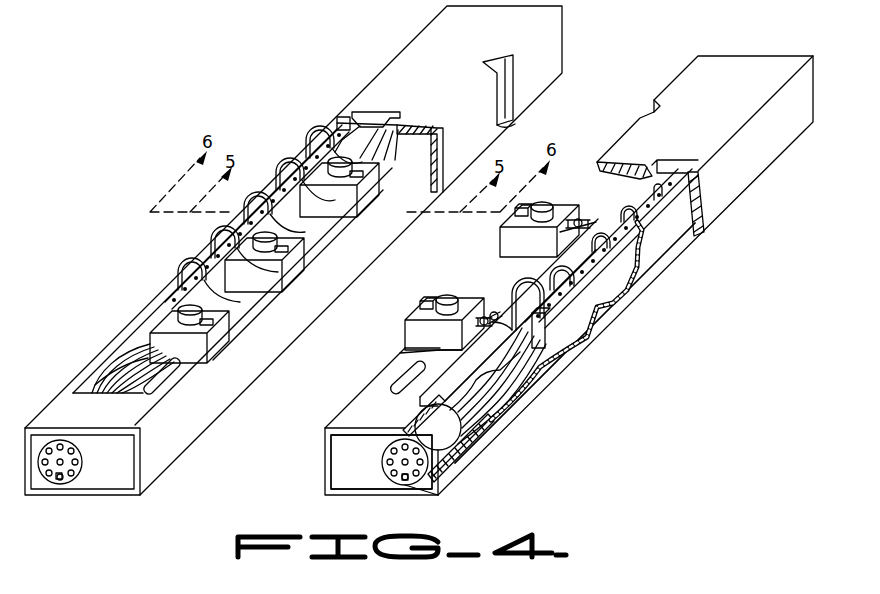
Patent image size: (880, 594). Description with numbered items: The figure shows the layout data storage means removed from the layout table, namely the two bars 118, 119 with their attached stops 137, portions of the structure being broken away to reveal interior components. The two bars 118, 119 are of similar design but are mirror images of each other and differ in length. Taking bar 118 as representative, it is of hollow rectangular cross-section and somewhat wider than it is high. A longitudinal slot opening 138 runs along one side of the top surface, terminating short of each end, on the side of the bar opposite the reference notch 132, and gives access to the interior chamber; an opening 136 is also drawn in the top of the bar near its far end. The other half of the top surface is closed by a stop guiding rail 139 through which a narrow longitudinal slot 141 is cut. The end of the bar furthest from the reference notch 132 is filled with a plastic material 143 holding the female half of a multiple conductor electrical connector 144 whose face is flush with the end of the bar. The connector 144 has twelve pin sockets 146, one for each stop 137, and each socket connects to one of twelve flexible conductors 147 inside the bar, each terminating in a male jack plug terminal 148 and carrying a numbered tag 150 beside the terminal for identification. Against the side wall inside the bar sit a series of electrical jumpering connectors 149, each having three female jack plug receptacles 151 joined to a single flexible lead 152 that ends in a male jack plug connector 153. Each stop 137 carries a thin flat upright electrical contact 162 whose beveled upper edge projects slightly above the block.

The bar 118 is at (756, 90).
The bar 119 is at (491, 34).
The reference notch 132 is at (660, 105).
The latch window 136 is at (518, 125).
The stop 137 is at (268, 289).
The longitudinal slot opening 138 is at (683, 172).
The stop guiding rail 139 is at (400, 356).
The narrow longitudinal slot 141 is at (395, 381).
The plastic material 143 is at (367, 472).
The multiple conductor electrical connector 144 is at (454, 435).
The pin socket 146 is at (410, 488).
The flexible conductor 147 is at (480, 403).
The male jack plug terminal 148 is at (482, 318).
The electrical jumpering connector 149 is at (560, 318).
The numbered tag 150 is at (493, 312).
The female jack plug receptacle 151 is at (588, 271).
The flexible lead 152 is at (600, 248).
The male jack plug connector 153 is at (582, 222).
The electrical contact 162 is at (285, 262).